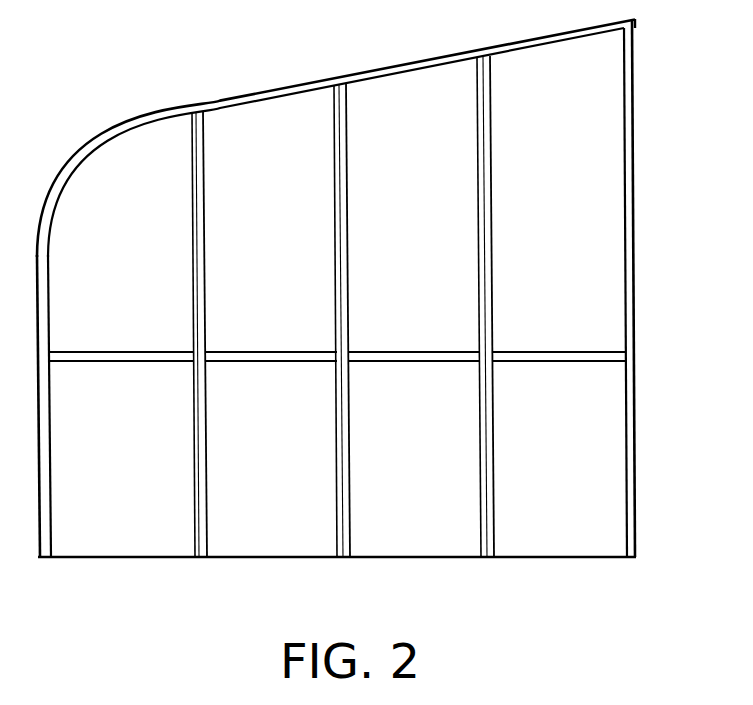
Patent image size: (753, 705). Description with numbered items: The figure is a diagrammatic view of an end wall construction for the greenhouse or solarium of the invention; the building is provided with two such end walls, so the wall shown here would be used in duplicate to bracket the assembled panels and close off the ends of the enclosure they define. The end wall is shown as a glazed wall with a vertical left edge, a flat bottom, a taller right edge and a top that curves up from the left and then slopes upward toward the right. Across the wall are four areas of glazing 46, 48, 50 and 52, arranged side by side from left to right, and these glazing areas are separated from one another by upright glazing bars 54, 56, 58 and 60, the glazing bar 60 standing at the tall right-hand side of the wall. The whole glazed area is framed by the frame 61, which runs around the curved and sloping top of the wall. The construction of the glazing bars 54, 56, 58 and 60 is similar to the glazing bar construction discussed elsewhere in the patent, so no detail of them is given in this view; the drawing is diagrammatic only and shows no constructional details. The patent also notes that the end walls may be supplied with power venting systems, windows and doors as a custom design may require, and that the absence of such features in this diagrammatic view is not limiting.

The glazing 46 is at (140, 543).
The glazing 48 is at (312, 543).
The glazing 50 is at (460, 542).
The glazing 52 is at (547, 542).
The glazing bar 54 is at (207, 208).
The glazing bar 56 is at (334, 138).
The glazing bar 58 is at (477, 116).
The glazing bar 60 is at (623, 85).
The frame 61 is at (199, 108).